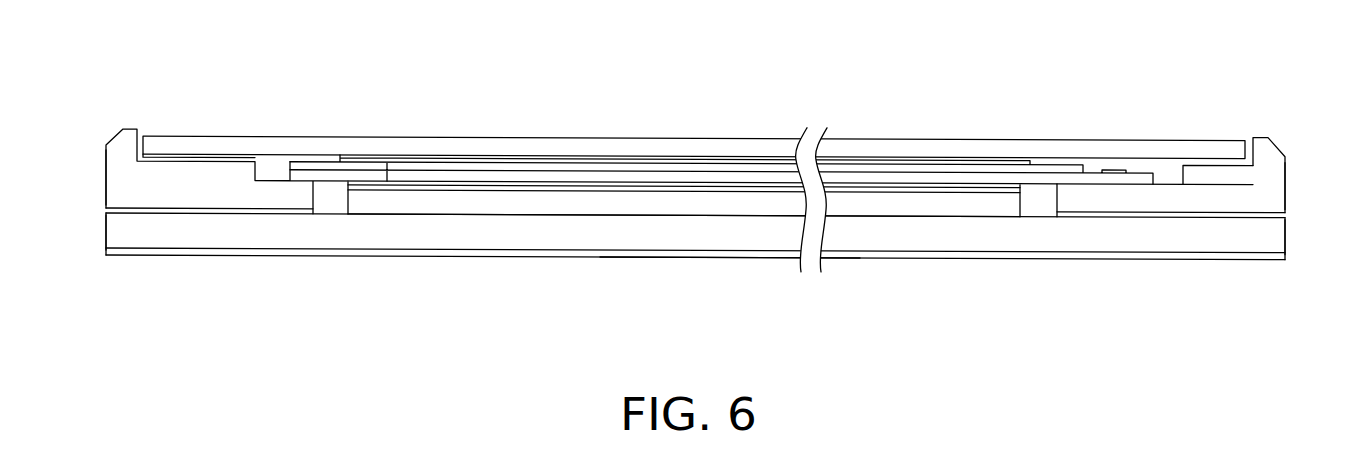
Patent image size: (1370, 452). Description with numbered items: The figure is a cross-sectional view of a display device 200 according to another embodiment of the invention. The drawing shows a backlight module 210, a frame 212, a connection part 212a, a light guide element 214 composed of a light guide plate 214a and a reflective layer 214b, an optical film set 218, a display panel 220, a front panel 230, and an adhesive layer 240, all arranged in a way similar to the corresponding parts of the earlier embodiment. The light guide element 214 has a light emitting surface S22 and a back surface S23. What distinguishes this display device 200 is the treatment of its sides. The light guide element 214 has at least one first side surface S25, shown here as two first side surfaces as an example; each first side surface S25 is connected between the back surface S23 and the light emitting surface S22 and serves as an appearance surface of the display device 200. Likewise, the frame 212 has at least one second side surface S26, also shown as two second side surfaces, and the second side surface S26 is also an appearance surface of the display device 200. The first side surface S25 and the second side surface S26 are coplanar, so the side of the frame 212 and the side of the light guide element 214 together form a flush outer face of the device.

The display device 200 is at (1247, 48).
The backlight module 210 is at (695, 286).
The frame 212 is at (1270, 172).
The connection part 212a is at (1183, 197).
The light guide element 214 is at (695, 286).
The light guide plate 214a is at (432, 237).
The reflective layer 214b is at (498, 253).
The optical film set 218 is at (486, 196).
The display panel 220 is at (920, 168).
The front panel 230 is at (655, 148).
The adhesive layer 240 is at (235, 210).
The light emitting surface S22 is at (734, 205).
The back surface S23 is at (734, 266).
The first side surface S25 is at (98, 237).
The second side surface S26 is at (98, 183).